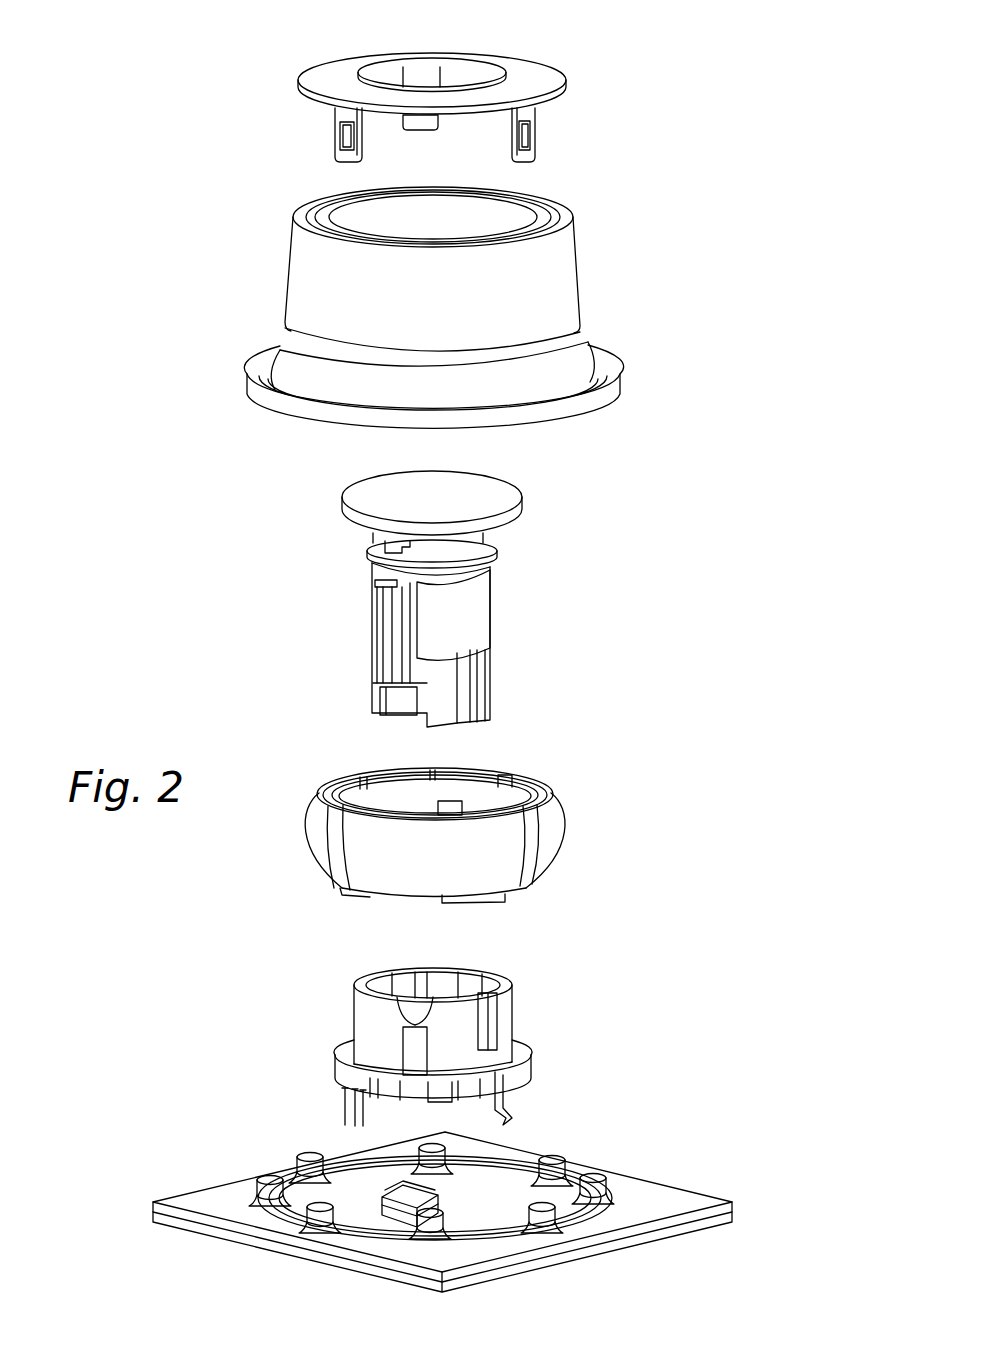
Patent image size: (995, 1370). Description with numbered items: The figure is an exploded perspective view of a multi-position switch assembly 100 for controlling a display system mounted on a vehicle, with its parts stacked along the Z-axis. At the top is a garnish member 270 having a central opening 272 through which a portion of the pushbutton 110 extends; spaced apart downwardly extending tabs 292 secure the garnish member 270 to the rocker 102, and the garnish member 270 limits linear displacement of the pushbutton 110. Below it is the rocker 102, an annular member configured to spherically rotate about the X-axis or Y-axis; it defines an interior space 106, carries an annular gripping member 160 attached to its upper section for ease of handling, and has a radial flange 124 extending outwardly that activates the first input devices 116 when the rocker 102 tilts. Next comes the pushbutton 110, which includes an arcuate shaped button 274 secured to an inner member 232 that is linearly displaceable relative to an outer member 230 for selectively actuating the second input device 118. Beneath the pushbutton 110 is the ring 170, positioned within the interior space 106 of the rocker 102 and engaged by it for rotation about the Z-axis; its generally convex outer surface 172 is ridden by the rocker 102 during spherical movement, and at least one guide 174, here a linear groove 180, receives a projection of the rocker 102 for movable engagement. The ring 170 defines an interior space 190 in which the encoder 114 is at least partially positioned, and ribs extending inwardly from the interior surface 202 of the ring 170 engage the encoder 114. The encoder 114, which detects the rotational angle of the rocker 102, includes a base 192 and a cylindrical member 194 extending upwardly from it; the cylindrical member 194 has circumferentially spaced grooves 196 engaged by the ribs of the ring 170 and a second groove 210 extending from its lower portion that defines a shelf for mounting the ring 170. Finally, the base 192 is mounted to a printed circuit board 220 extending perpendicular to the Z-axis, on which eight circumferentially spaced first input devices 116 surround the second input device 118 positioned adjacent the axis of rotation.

The multi-position switch assembly 100 is at (186, 70).
The rocker 102 is at (453, 294).
The interior space 106 is at (482, 220).
The pushbutton 110 is at (416, 590).
The encoder 114 is at (391, 1042).
The first input devices 116 is at (553, 1162).
The second input device 118 is at (390, 1210).
The radial flange 124 is at (303, 368).
The gripping member 160 is at (474, 256).
The ring 170 is at (465, 835).
The outer surface 172 is at (408, 870).
The guide 174 is at (326, 862).
The linear groove 180 is at (527, 873).
The interior space 190 is at (500, 773).
The base 192 is at (520, 1076).
The cylindrical member 194 is at (508, 1003).
The grooves 196 is at (356, 1010).
The interior surface 202 is at (412, 807).
The second groove 210 is at (410, 1050).
The printed circuit board 220 is at (459, 1207).
The outer member 230 is at (455, 613).
The inner member 232 is at (474, 543).
The garnish member 270 is at (462, 95).
The central opening 272 is at (468, 68).
The button 274 is at (388, 493).
The tabs 292 is at (334, 132).